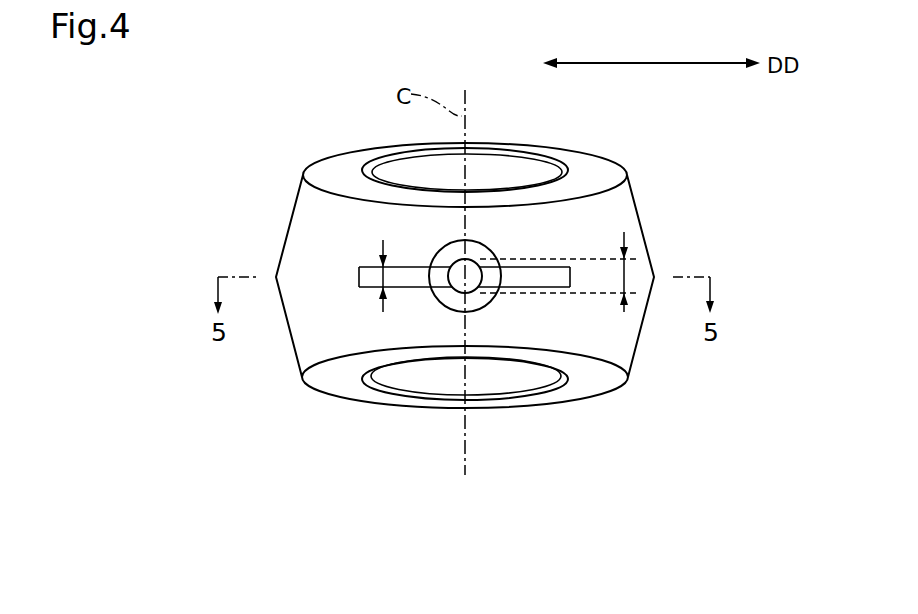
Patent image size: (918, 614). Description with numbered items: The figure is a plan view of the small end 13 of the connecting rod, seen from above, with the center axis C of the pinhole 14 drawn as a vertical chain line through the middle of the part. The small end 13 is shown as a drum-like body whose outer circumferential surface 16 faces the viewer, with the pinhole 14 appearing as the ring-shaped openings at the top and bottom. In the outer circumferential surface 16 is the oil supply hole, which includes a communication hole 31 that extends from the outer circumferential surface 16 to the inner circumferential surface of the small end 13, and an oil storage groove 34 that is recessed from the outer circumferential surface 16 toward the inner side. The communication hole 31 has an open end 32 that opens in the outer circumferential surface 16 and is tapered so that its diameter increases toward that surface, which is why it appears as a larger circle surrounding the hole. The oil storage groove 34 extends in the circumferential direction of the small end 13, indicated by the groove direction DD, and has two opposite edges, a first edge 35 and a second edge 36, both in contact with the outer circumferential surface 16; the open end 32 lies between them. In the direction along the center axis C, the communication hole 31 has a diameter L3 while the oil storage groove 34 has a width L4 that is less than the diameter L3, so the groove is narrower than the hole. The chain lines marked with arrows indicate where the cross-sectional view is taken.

The small end 13 is at (615, 210).
The pinhole 14 is at (418, 380).
The outer circumferential surface 16 is at (315, 222).
The communication hole 31 is at (453, 267).
The open end 32 is at (478, 252).
The oil storage groove 34 is at (550, 268).
The first edge 35 is at (359, 287).
The second edge 36 is at (572, 287).
The diameter L3 is at (626, 276).
The width L4 is at (381, 270).